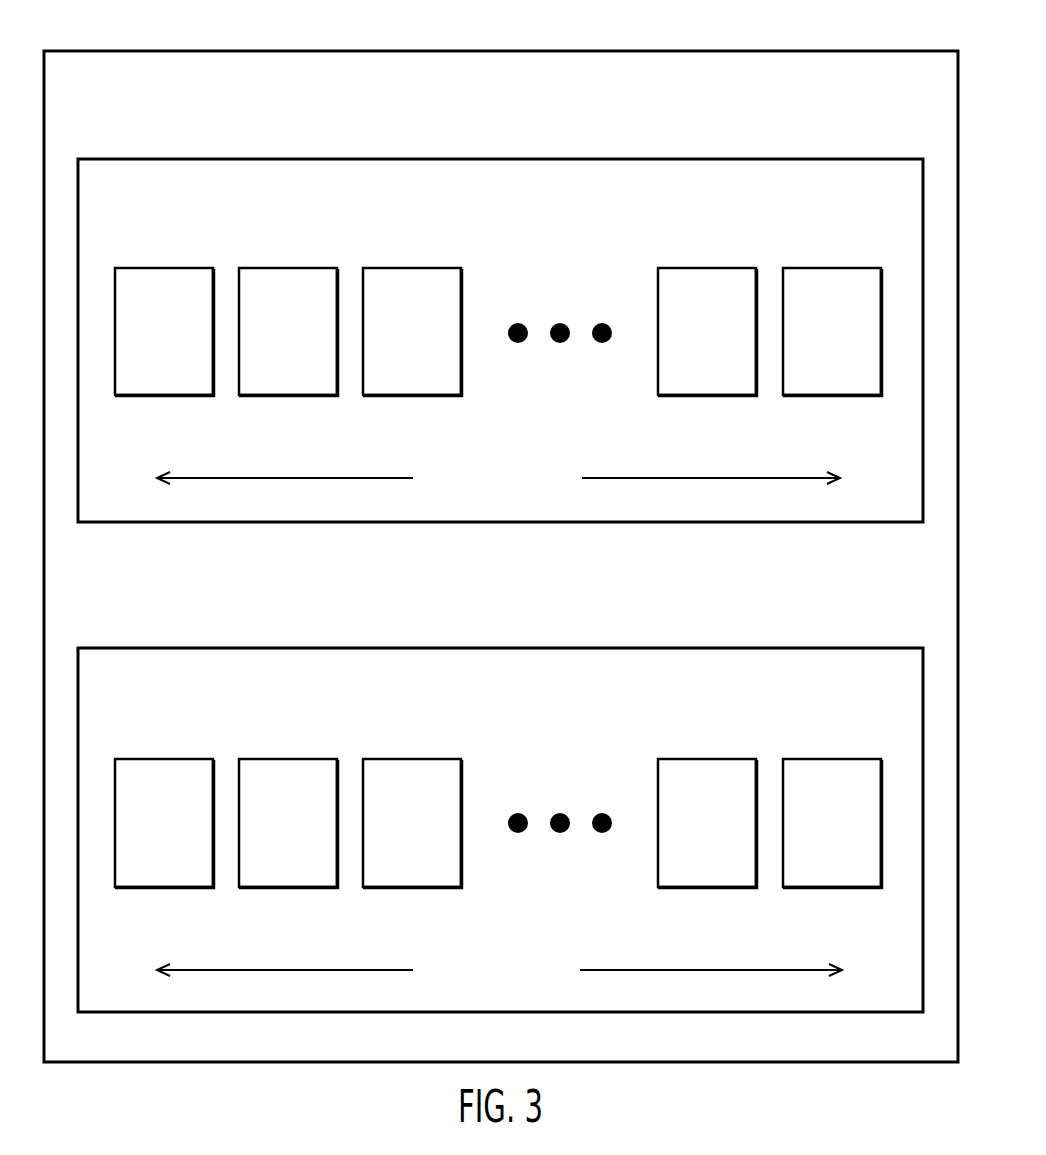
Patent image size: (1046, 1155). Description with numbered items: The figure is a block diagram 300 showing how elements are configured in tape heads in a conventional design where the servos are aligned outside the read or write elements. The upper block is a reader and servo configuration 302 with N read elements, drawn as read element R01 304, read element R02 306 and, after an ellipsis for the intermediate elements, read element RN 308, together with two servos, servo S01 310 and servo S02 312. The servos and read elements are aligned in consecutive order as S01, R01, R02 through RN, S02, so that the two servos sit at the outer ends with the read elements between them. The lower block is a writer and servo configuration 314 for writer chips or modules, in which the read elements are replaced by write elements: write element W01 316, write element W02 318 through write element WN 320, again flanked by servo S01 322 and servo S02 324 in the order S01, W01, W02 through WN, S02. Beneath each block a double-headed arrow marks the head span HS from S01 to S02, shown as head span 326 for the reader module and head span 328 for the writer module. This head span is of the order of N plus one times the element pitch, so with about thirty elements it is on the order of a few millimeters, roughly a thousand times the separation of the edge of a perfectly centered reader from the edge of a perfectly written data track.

The block diagram 300 is at (122, 51).
The reader and servo configuration 302 is at (128, 159).
The read element R01 304 is at (287, 268).
The read element R02 306 is at (411, 268).
The read element RN 308 is at (705, 268).
The servo S01 310 is at (163, 268).
The servo S02 312 is at (830, 268).
The writer and servo configuration 314 is at (128, 648).
The write element W01 316 is at (287, 759).
The write element W02 318 is at (411, 759).
The write element WN 320 is at (705, 759).
The servo S01 322 is at (163, 759).
The servo S02 324 is at (830, 759).
The head span HS of reader module 326 is at (478, 452).
The head span HS of writer module 328 is at (478, 945).